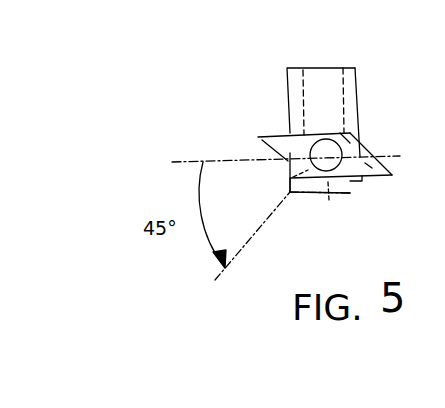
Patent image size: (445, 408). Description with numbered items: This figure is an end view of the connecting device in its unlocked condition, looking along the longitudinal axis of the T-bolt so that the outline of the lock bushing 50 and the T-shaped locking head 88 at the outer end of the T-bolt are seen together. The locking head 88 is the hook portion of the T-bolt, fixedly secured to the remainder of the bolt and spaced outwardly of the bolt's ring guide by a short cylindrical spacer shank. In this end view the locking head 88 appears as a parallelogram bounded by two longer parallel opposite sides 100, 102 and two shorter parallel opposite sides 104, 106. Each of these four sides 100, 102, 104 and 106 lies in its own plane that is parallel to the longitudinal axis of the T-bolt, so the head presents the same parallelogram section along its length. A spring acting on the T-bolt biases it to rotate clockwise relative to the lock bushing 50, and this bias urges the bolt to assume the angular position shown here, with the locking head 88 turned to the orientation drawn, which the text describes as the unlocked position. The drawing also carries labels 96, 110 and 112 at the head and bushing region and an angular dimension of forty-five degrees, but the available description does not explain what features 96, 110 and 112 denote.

The lock bushing 50 is at (379, 75).
The locking head 88 is at (398, 186).
The mounting hole 96 is at (327, 164).
The longer side 100 is at (328, 132).
The longer side 102 is at (350, 182).
The shorter side 104 is at (270, 152).
The shorter side 106 is at (367, 148).
The clearance face 110 is at (281, 174).
The insert tip 112 is at (387, 157).